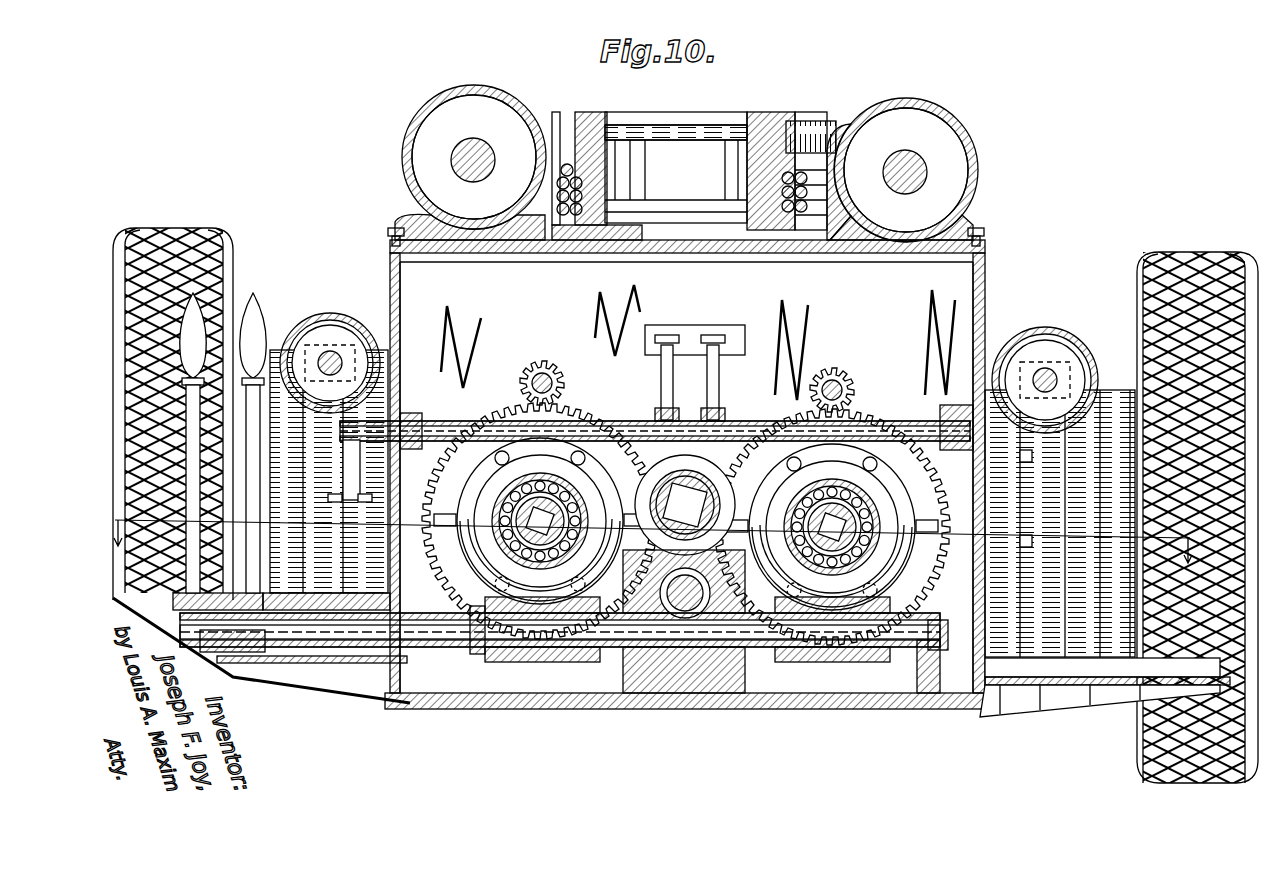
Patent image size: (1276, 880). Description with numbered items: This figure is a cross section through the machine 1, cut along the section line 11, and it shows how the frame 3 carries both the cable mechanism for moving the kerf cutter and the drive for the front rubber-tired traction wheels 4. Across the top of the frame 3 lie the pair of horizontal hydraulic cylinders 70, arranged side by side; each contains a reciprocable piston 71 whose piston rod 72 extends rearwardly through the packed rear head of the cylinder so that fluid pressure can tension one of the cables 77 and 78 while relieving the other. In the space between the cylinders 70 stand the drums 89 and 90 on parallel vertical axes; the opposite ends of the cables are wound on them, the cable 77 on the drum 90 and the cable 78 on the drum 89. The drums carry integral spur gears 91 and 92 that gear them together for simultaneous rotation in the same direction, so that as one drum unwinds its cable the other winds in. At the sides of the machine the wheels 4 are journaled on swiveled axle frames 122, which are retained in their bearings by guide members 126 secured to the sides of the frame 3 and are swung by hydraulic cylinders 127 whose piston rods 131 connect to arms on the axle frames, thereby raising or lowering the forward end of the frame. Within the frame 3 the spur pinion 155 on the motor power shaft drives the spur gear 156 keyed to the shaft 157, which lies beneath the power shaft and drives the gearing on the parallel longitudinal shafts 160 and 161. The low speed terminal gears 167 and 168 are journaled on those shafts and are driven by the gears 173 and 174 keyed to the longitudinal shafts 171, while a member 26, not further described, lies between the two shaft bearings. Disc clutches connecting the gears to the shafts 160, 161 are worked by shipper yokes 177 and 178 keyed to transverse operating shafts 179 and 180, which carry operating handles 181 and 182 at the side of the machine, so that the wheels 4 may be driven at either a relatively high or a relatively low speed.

The frame housing 1 is at (552, 715).
The frame 3 is at (805, 710).
The front rubber-tired traction wheel 4 is at (208, 236).
The section line 11 is at (653, 555).
The hub 26 is at (720, 465).
The horizontal hydraulic cylinder 70 is at (418, 128).
The reciprocable piston 71 is at (490, 112).
The piston rod 72 is at (451, 160).
The cable 77 is at (840, 130).
The cable 78 is at (567, 164).
The horizontal drum 89 is at (750, 113).
The horizontal drum 90 is at (806, 112).
The spur gear 91 is at (557, 115).
The spur gear 92 is at (804, 172).
The swiveled axle frame 122 is at (1048, 640).
The guide member 126 is at (365, 597).
The hydraulic cylinder 127 is at (330, 318).
The piston rod 131 is at (333, 355).
The spur pinion 155 is at (722, 418).
The spur gear 156 is at (918, 708).
The shaft 157 is at (683, 618).
The longitudinal shaft 160 is at (505, 505).
The longitudinal shaft 161 is at (872, 520).
The spur gear 167 is at (572, 410).
The spur gear 168 is at (905, 432).
The longitudinal shaft 171 is at (551, 380).
The gear 173 is at (547, 372).
The gear 174 is at (838, 372).
The shipper yoke 177 is at (518, 625).
The shipper yoke 178 is at (777, 630).
The transverse operating shaft 179 is at (478, 655).
The transverse operating shaft 180 is at (660, 648).
The operating handle 181 is at (258, 312).
The operating handle 182 is at (200, 330).